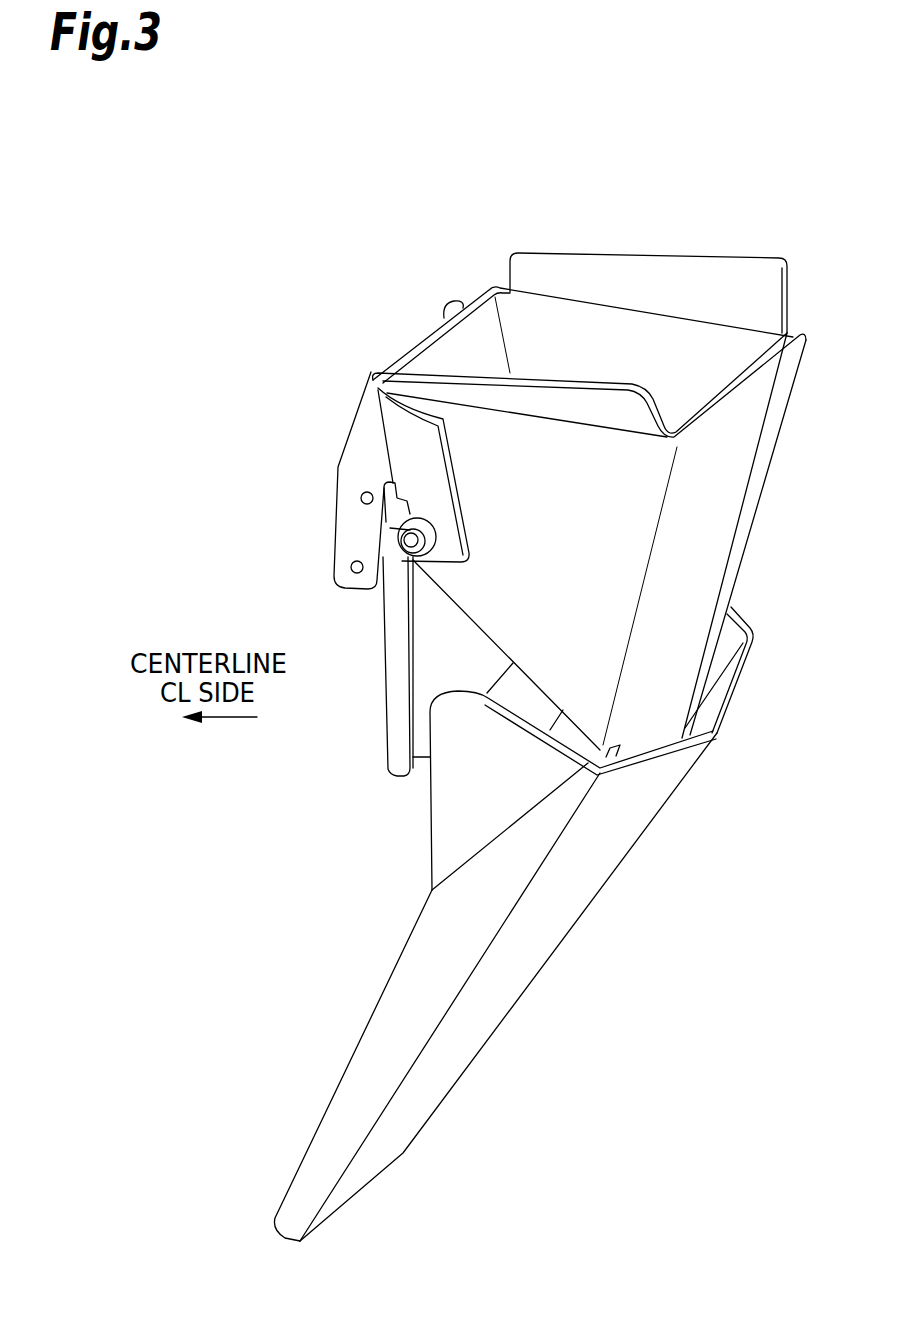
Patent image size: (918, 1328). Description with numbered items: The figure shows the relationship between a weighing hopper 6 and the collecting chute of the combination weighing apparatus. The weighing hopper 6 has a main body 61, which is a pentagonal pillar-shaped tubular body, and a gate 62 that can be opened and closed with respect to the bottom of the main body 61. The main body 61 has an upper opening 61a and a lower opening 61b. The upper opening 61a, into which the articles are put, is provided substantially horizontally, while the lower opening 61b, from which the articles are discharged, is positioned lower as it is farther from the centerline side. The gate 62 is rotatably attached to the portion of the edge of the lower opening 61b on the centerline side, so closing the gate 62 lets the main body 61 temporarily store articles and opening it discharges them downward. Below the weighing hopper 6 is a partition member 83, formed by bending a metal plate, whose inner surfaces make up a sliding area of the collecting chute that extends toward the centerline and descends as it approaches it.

The weighing hopper 6 is at (756, 505).
The main body 61 is at (430, 340).
The upper opening 61a is at (603, 313).
The lower opening 61b is at (449, 604).
The gate 62 is at (390, 727).
The partition member 83 is at (537, 963).